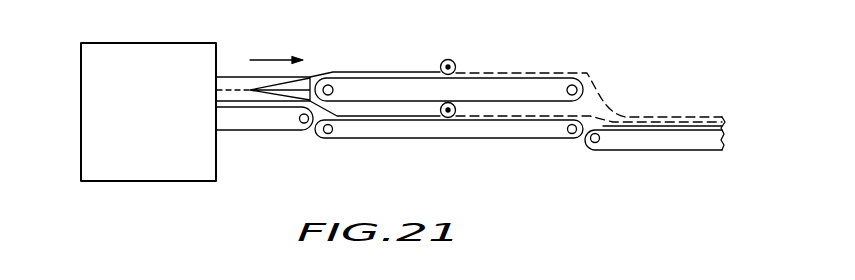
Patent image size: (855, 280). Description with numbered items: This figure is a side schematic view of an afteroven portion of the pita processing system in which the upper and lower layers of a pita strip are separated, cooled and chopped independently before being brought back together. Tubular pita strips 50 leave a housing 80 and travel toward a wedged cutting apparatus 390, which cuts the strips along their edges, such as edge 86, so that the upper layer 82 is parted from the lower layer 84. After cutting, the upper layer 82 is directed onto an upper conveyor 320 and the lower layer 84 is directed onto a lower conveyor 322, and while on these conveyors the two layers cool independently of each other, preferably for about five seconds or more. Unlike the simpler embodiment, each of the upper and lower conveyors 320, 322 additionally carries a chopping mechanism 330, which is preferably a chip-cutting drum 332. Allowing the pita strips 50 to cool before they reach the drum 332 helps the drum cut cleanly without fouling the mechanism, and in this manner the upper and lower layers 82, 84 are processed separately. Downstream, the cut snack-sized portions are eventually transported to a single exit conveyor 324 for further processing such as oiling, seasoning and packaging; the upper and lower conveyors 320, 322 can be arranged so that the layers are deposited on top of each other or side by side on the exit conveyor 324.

The housing / drive unit 80 is at (140, 63).
The upper layer 82 is at (222, 76).
The tubular pita strips 50 is at (240, 67).
The wedged cutting apparatus 390 is at (311, 69).
The edge 86 is at (235, 90).
The lower layer 84 is at (237, 107).
The upper conveyor 320 is at (356, 84).
The lower conveyor 322 is at (349, 128).
The exit conveyor 324 is at (647, 128).
The chopping mechanism 330 is at (452, 57).
The chip-cutting drum 332 is at (457, 65).